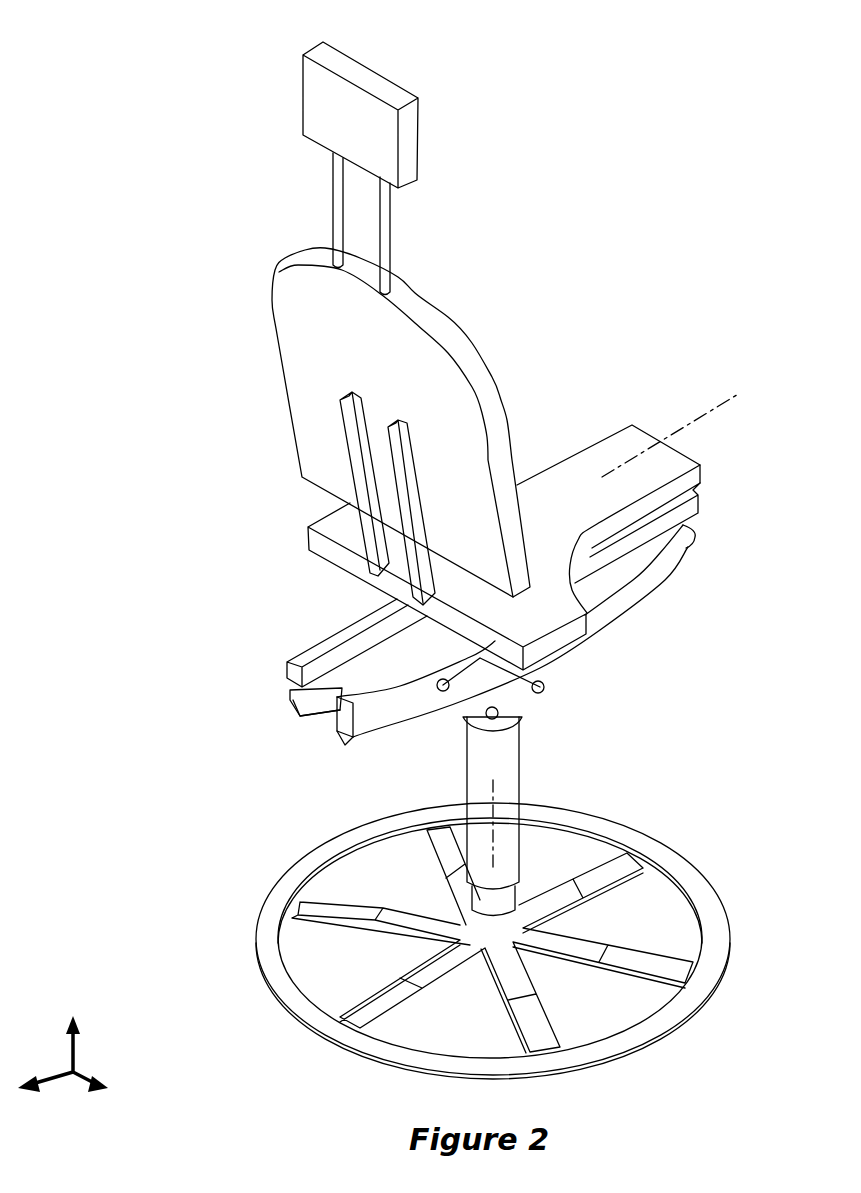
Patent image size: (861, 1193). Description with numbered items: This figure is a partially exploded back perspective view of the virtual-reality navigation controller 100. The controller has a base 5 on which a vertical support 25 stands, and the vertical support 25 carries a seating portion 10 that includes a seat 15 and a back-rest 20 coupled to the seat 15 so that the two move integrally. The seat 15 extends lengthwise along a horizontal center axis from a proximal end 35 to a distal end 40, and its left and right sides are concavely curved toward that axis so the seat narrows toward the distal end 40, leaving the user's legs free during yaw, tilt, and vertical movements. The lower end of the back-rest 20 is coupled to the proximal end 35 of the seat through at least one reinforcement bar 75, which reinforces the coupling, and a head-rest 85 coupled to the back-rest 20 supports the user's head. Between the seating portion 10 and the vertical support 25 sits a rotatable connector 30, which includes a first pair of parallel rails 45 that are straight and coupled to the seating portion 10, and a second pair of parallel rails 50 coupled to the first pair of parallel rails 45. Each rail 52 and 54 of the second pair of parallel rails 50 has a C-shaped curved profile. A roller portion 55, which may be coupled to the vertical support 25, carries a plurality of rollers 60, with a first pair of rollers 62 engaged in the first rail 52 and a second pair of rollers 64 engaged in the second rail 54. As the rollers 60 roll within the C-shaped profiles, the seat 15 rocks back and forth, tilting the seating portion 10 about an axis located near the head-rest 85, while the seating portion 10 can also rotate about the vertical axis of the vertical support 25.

The virtual-reality navigation controller 100 is at (490, 40).
The base 5 is at (738, 994).
The seating portion 10 is at (296, 503).
The seat 15 is at (552, 500).
The back-rest 20 is at (303, 370).
The vertical support 25 is at (497, 822).
The rotatable connector 30 is at (230, 712).
The proximal end 35 is at (343, 566).
The distal end 40 is at (688, 450).
The first pair of parallel rails 45 is at (337, 714).
The second pair of parallel rails 50 is at (336, 803).
The first rail 52 is at (380, 740).
The second rail 54 is at (303, 716).
The roller portion 55 is at (463, 715).
The plurality of rollers 60 is at (570, 778).
The first pair of rollers 62 is at (538, 693).
The second pair of rollers 64 is at (448, 688).
The reinforcement bar 75 is at (352, 391).
The head-rest 85 is at (325, 118).